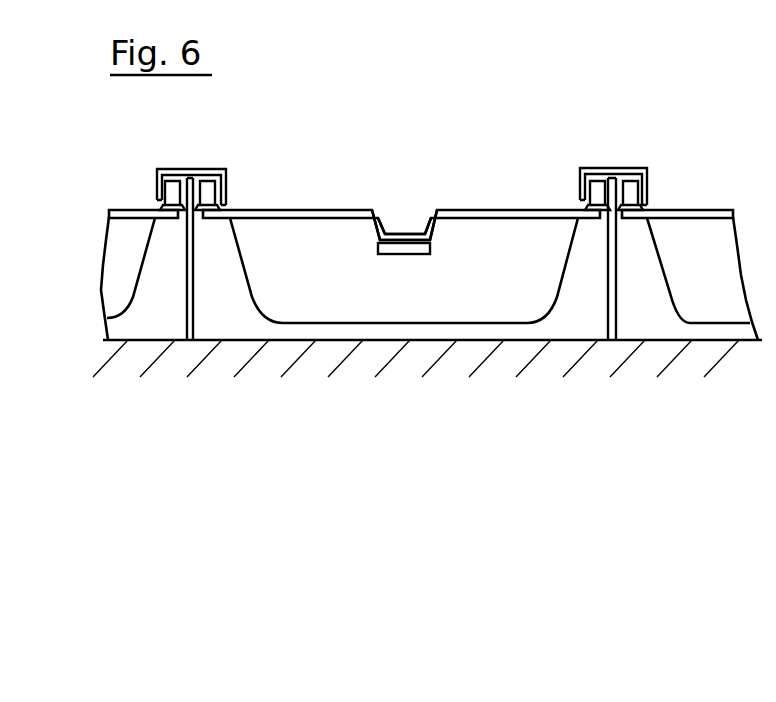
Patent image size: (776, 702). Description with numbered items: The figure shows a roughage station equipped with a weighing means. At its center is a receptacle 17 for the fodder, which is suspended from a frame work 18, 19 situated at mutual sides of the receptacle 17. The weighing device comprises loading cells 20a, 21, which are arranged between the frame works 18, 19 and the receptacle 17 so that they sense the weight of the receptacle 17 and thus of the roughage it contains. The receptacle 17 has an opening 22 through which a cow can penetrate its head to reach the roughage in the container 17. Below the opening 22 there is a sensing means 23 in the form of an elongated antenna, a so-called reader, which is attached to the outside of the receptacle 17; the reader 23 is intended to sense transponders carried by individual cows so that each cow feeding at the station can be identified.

The receptacle 17 is at (472, 315).
The frame work 18 is at (178, 323).
The frame work 19 is at (613, 303).
The loading cell 20a is at (210, 192).
The loading cell 21 is at (592, 197).
The opening 22 is at (405, 223).
The sensing means 23 is at (407, 248).